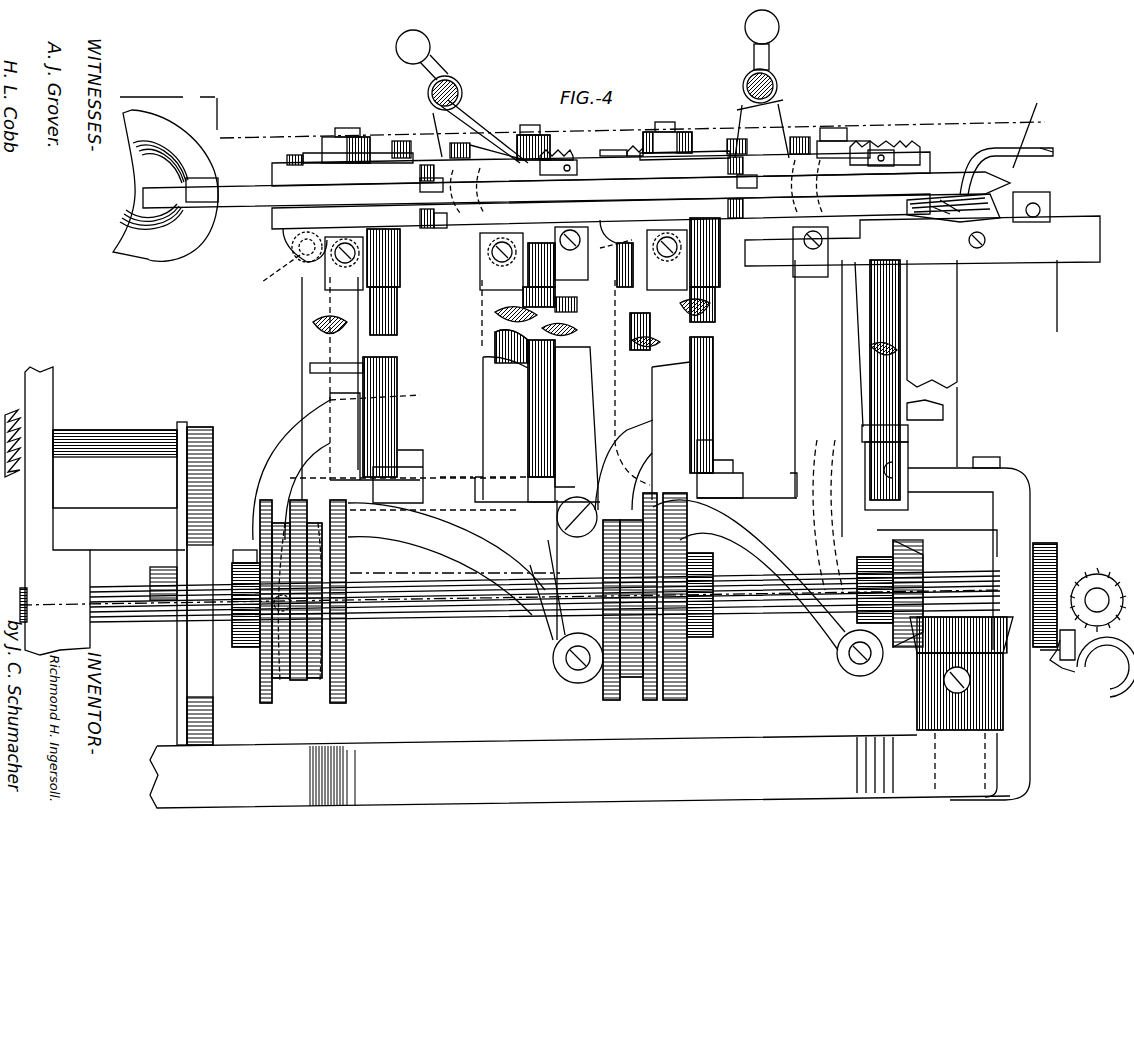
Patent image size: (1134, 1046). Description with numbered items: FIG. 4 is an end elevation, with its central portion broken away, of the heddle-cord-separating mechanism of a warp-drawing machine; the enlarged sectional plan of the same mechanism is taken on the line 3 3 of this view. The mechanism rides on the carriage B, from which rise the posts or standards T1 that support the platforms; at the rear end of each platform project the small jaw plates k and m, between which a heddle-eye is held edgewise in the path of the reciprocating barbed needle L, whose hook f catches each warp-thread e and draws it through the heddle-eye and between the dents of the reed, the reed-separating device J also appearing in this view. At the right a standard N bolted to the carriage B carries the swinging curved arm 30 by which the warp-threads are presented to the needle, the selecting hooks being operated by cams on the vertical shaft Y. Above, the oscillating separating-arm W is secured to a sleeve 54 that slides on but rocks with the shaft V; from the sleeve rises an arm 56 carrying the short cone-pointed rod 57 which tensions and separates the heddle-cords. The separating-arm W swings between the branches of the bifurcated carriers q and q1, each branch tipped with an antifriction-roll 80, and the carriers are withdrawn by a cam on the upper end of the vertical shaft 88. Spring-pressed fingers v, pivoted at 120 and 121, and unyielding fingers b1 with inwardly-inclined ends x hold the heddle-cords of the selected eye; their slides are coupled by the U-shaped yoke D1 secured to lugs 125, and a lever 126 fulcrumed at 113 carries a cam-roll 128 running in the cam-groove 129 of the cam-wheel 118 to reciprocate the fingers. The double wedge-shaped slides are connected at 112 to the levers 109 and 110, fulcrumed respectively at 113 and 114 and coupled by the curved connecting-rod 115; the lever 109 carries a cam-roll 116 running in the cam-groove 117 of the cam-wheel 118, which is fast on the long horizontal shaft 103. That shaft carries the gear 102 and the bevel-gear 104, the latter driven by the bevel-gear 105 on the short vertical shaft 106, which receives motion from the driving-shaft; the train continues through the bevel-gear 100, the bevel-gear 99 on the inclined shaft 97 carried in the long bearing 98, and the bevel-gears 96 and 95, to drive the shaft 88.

The line 3 3 is at (1060, 121).
The reed-separating device J is at (165, 185).
The barbed needle L is at (253, 210).
The lower jaw plate k is at (601, 215).
The short horizontal rod or spindle 57 is at (431, 40).
The arm 56 is at (440, 62).
The sleeve 54 is at (465, 88).
The rock-shaft V is at (470, 72).
The oscillating separating-arm W is at (608, 128).
The vertical shaft 88 is at (350, 126).
The unyielding fingers b1 is at (725, 258).
The bifurcated carrier q is at (372, 148).
The bifurcated carrier q1 is at (528, 126).
The antifriction-roll 80 is at (400, 140).
The pivot of spring-pressed finger 120 is at (552, 149).
The inwardly-inclined ends x is at (587, 202).
The upper jaw plate m is at (419, 188).
The spring-pressed fingers v is at (636, 186).
The lugs 125 is at (300, 243).
The connection of levers to slides 112 is at (872, 241).
The pivot of spring-pressed finger 121 is at (827, 241).
The lever 109 is at (300, 296).
The U-shaped yoke D1 is at (549, 396).
The post or standard T1 is at (495, 348).
The lever 110 is at (914, 338).
The vertical shaft Y is at (900, 312).
The standard N is at (957, 340).
The lever 126 is at (398, 313).
The long horizontal shaft 103 is at (480, 620).
The cam-groove 129 is at (275, 710).
The cam-roll 128 is at (262, 630).
The cam-groove 117 is at (340, 570).
The cam-wheel 118 is at (298, 690).
The fulcrum 113 is at (335, 690).
The cam-roll 116 is at (352, 645).
The curved connecting-rod 115 is at (513, 546).
The fulcrum 114 is at (577, 497).
The bevel-gear 104 is at (900, 545).
The bevel-gear 105 is at (915, 660).
The gear 102 is at (1033, 535).
The short vertical shaft 106 is at (1028, 785).
The bevel-gear 100 is at (1057, 555).
The inclined shaft 97 is at (1095, 585).
The bevel-gear 99 is at (1104, 570).
The long bearing 98 is at (1097, 695).
The bevel-gear 96 is at (1110, 695).
The bevel-gear 95 is at (1062, 695).
The carriage B is at (580, 771).
The warp-threads e is at (1015, 160).
The hook of the needle f is at (957, 208).
The swinging curved arm 30 is at (1050, 155).